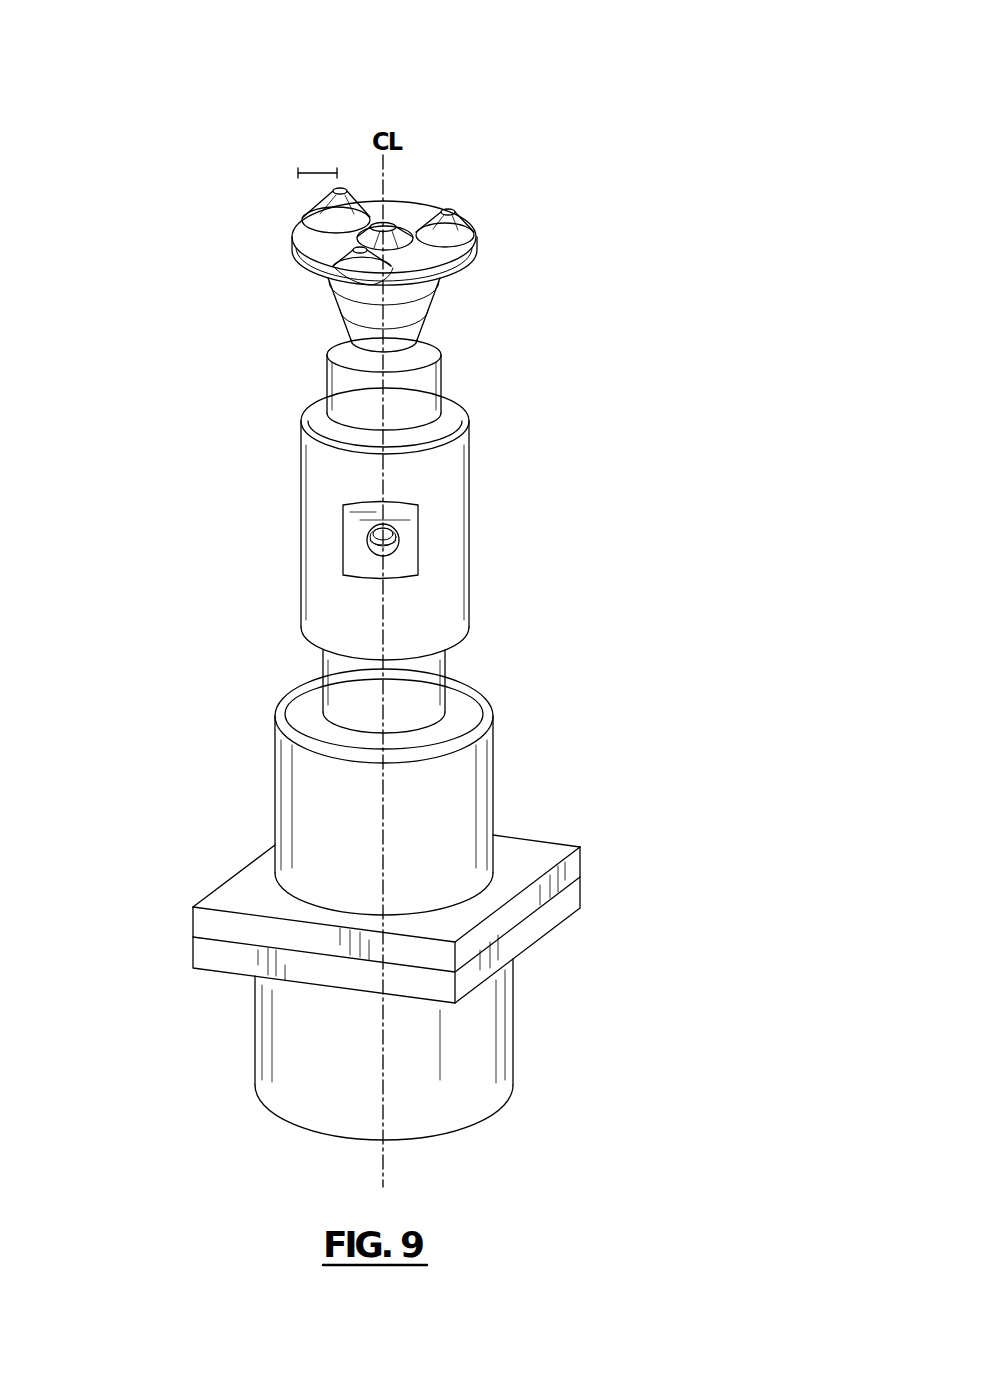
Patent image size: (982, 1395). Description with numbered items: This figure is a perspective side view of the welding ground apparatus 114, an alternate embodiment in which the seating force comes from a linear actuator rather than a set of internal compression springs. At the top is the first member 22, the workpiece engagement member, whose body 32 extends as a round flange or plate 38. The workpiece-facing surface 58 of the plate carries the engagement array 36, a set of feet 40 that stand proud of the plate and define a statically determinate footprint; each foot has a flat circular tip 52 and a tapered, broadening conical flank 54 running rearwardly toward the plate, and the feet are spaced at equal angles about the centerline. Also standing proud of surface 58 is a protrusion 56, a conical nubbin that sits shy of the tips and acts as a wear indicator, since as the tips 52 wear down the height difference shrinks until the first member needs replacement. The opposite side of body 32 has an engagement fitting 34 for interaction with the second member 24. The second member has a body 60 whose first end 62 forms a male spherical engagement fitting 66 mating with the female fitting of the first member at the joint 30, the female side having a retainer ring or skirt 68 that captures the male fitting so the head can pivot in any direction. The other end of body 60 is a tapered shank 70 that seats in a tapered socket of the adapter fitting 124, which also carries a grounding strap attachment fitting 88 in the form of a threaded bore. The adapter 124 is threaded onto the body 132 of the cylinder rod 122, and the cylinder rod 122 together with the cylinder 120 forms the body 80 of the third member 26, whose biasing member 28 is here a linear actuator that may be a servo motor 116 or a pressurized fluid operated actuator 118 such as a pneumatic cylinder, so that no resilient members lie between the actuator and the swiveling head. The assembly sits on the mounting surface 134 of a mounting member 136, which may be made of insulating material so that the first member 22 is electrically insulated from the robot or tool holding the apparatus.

The welding ground apparatus 114 is at (628, 115).
The first member 22 is at (552, 227).
The second member 24 is at (542, 435).
The third member 26 is at (548, 817).
The biasing member 28 is at (480, 800).
The joint 30 is at (450, 330).
The body 32 is at (562, 287).
The engagement fitting 34 is at (462, 298).
The engagement array 36 is at (257, 200).
The plate 38 is at (300, 270).
The set of feet 40 is at (313, 165).
The tip 52 is at (341, 187).
The flank 54 is at (356, 207).
The protrusion 56 is at (390, 218).
The workpiece-facing surface 58 is at (414, 207).
The body 60 is at (345, 418).
The first end 62 is at (315, 380).
The engagement fitting 66 is at (452, 368).
The retainer ring 68 is at (330, 317).
The shank 70 is at (460, 463).
The body 80 is at (296, 760).
The grounding strap attachment fitting 88 is at (370, 548).
The servo motor 116 is at (273, 1035).
The pressurized fluid operated actuator 118 is at (384, 1049).
The cylinder 120 is at (497, 1028).
The cylinder rod 122 is at (443, 693).
The adapter 124 is at (448, 540).
The cylinder rod body 132 is at (447, 662).
The mounting surface 134 is at (205, 923).
The mounting member 136 is at (247, 882).